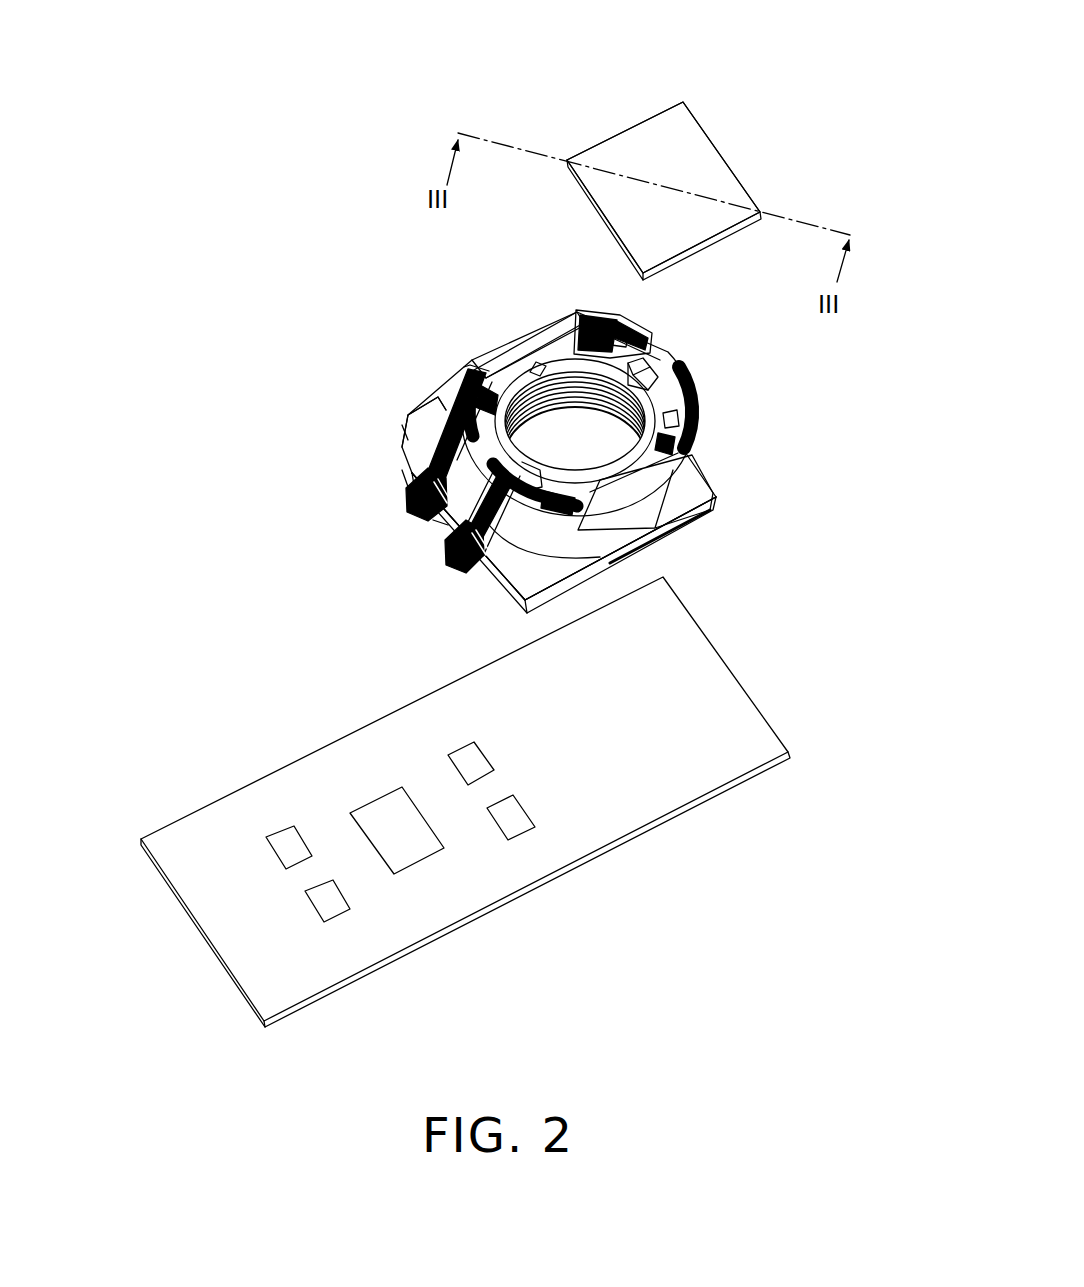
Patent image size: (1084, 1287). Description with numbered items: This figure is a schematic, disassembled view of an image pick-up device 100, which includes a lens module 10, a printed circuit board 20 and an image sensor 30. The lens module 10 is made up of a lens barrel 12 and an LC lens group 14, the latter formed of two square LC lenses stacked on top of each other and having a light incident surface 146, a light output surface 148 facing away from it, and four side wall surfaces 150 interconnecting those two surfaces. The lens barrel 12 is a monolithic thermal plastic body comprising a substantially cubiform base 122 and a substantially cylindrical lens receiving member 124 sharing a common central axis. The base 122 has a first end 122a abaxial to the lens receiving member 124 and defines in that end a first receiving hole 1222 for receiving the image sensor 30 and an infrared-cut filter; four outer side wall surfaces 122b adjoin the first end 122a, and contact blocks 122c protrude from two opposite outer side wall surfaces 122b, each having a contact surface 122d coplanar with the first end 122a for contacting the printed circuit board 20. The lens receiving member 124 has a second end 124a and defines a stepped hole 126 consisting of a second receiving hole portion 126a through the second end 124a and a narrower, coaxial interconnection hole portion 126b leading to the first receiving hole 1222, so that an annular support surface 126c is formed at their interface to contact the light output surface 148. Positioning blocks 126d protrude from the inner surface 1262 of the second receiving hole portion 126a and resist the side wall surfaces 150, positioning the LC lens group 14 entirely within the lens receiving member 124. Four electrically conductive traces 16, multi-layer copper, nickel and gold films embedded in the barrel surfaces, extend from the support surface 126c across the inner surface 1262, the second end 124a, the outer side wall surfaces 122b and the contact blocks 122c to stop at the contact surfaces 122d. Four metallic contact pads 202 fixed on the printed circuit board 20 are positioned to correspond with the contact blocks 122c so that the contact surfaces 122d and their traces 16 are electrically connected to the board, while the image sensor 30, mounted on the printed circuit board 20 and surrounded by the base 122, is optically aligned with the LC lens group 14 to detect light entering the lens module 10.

The image pick-up device 100 is at (344, 141).
The lens module 10 is at (862, 373).
The lens barrel 12 is at (816, 417).
The LC lens group 14 is at (705, 232).
The electrically conductive traces 16 is at (493, 563).
The printed circuit board 20 is at (203, 846).
The image sensor 30 is at (374, 805).
The base 122 is at (698, 493).
The first end 122a is at (401, 462).
The outer side wall surfaces 122b is at (408, 440).
The contact blocks 122c is at (433, 520).
The contact surface 122d is at (410, 510).
The first receiving hole 1222 is at (602, 463).
The lens receiving member 124 is at (670, 477).
The second end 124a is at (550, 372).
The stepped hole 126 is at (391, 243).
The second receiving hole portion 126a is at (480, 363).
The interconnection hole portion 126b is at (525, 335).
The support surface 126c is at (587, 318).
The positioning blocks 126d is at (537, 365).
The inner surface 1262 is at (668, 362).
The light incident surface 146 is at (692, 142).
The light output surface 148 is at (736, 243).
The side wall surfaces 150 is at (578, 188).
The contact pads 202 is at (284, 837).